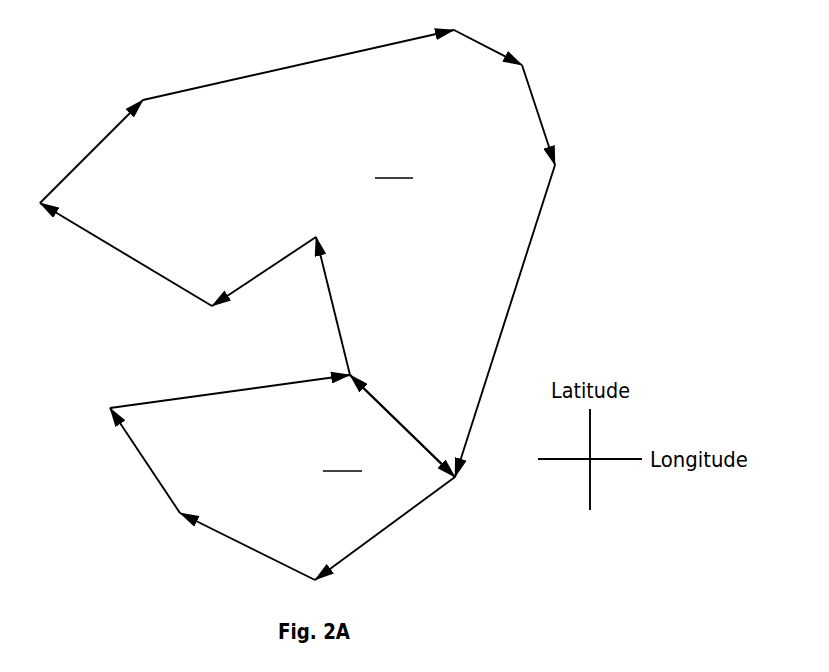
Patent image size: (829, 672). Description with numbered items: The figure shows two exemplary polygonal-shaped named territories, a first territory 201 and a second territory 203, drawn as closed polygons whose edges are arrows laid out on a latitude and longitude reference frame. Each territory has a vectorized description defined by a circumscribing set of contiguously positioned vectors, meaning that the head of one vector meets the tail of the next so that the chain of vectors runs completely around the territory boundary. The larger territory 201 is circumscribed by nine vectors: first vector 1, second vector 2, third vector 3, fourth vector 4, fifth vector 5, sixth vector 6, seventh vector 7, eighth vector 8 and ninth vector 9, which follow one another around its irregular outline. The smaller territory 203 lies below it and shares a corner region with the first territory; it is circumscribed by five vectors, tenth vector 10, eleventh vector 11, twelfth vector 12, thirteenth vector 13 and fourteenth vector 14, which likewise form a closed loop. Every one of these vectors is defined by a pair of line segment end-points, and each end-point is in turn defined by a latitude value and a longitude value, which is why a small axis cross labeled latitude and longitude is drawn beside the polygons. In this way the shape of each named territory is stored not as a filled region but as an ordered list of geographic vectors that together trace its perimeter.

The polygonal-shaped named territory 201 is at (316, 243).
The polygonal-shaped named territory 203 is at (266, 475).
The vector 1 is at (488, 47).
The vector 2 is at (539, 113).
The vector 3 is at (523, 271).
The vector 4 is at (362, 386).
The vector 5 is at (333, 302).
The vector 6 is at (260, 273).
The vector 7 is at (127, 256).
The vector 8 is at (90, 152).
The vector 9 is at (298, 64).
The vector 10 is at (385, 529).
The vector 11 is at (245, 546).
The vector 12 is at (141, 456).
The vector 13 is at (228, 392).
The vector 14 is at (436, 468).